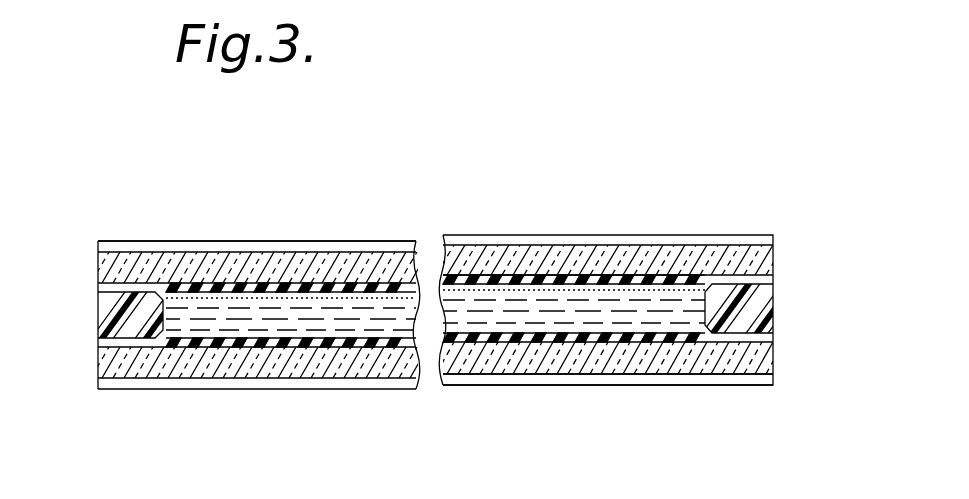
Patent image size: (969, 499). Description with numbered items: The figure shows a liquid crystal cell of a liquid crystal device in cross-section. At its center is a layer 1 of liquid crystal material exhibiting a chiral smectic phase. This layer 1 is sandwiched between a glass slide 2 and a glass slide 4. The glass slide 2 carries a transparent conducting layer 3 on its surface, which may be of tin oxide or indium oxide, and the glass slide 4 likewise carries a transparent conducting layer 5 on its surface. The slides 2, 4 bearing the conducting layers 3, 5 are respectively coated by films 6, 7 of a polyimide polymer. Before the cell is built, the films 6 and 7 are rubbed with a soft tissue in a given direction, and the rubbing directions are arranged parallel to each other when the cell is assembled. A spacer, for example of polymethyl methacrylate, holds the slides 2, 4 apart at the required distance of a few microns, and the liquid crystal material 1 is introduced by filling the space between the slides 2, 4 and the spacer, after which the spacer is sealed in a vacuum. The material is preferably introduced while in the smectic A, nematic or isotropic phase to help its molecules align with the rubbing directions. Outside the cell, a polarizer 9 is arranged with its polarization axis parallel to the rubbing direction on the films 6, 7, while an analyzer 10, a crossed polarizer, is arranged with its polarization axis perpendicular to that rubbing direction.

The layer of liquid crystal material 1 is at (682, 305).
The glass slide 2 is at (765, 262).
The transparent conducting layer 3 is at (581, 275).
The glass slide 4 is at (98, 365).
The transparent conducting layer 5 is at (241, 348).
The film of polyimide polymer 6 is at (503, 280).
The film of polyimide polymer 7 is at (320, 343).
The polarizer 9 is at (212, 241).
The analyzer 10 is at (634, 385).